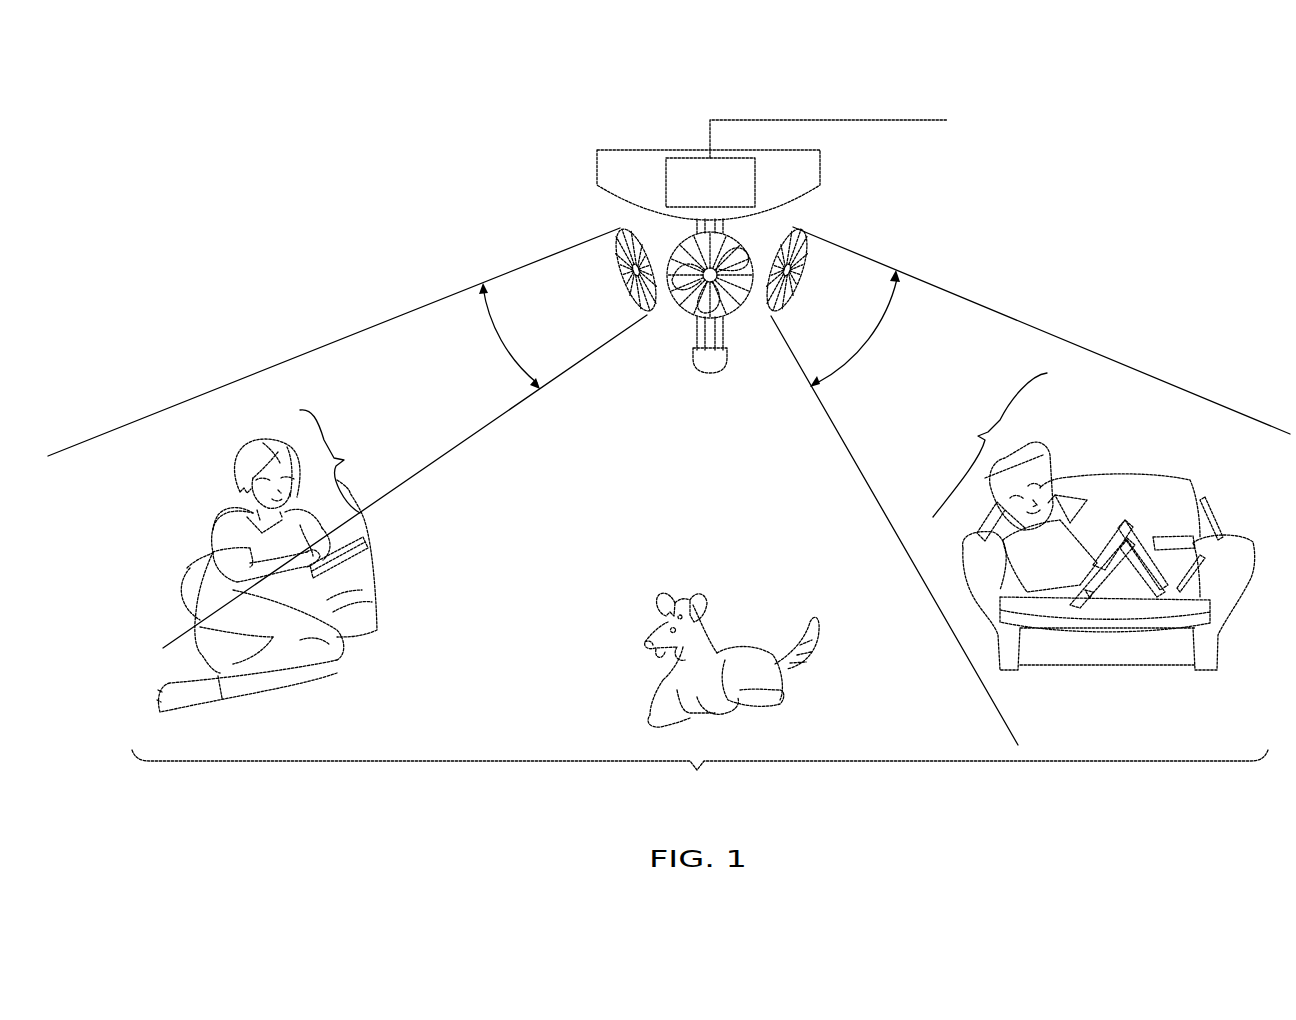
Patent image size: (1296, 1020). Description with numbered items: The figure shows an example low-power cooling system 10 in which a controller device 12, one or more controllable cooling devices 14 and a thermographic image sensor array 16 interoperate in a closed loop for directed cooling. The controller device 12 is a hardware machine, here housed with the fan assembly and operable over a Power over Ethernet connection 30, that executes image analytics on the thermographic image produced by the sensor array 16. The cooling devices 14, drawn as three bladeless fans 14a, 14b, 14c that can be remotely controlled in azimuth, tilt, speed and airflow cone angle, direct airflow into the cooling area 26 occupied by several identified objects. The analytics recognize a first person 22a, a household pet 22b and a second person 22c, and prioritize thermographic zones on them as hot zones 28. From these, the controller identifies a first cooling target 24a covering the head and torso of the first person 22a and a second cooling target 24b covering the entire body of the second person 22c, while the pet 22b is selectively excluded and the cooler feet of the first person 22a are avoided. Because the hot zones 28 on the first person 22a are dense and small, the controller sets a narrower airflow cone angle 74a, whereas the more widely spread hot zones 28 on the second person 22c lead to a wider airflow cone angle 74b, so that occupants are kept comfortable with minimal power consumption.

The low-power cooling system 10 is at (517, 206).
The controller device 12 is at (681, 157).
The controllable cooling device 14 is at (509, 259).
The cooling device 14a is at (622, 285).
The cooling device 14b is at (733, 312).
The cooling device 14c is at (806, 236).
The thermographic image sensor array 16 is at (692, 366).
The identified object P1 22a is at (185, 512).
The identified object P4 22b is at (808, 696).
The identified object P2 22c is at (1077, 445).
The first cooling target T1 24a is at (350, 461).
The second cooling target T2 24b is at (986, 445).
The cooling area 26 is at (700, 777).
The hot zone 28 is at (240, 468).
The Power over Ethernet connection 30 is at (862, 118).
The airflow cone angle 74a is at (497, 333).
The airflow cone angle 74b is at (866, 340).